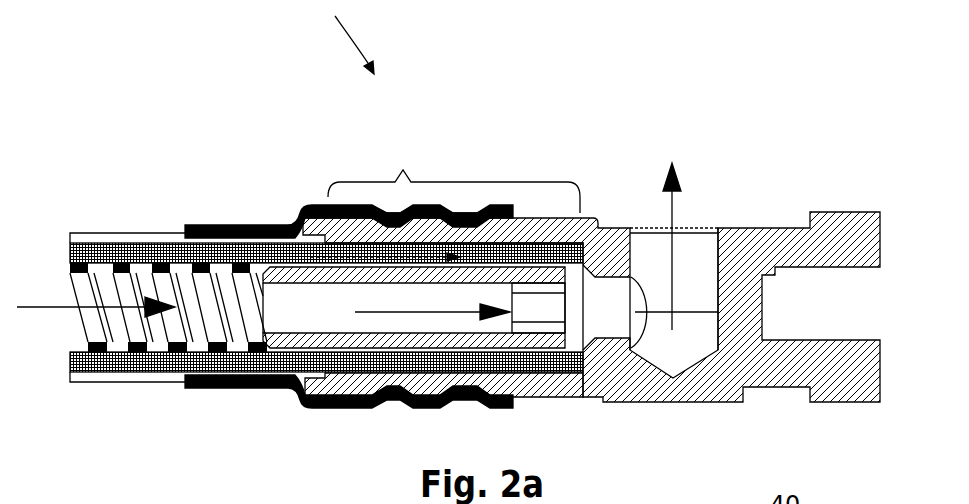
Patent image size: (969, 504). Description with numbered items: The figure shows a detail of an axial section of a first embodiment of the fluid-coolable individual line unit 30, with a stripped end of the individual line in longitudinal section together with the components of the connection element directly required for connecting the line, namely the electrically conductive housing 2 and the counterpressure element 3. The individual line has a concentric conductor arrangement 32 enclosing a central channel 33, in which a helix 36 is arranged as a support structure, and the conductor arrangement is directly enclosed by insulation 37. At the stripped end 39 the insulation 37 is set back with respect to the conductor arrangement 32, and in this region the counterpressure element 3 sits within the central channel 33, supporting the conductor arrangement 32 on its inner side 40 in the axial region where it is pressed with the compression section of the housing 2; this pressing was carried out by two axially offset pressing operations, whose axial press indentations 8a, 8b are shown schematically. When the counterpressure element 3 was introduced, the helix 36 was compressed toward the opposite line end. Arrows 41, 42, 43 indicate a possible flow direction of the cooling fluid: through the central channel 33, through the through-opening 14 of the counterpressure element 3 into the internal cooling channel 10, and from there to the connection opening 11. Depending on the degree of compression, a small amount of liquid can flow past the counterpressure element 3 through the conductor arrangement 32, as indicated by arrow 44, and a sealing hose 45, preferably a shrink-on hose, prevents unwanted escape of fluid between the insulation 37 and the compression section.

The electrically conductive housing 2 is at (680, 402).
The counterpressure element 3 is at (573, 226).
The axial press indentation 8a is at (447, 409).
The axial press indentation 8b is at (383, 407).
The internal cooling channel 10 is at (722, 231).
The connection opening 11 is at (687, 235).
The through-opening 14 is at (278, 292).
The fluid-coolable individual line unit 30 is at (344, 37).
The concentric conductor arrangement 32 is at (123, 363).
The central channel 33 is at (142, 286).
The helix 36 is at (160, 264).
The insulation 37 is at (88, 233).
The stripped end 39 is at (454, 176).
The inner side 40 is at (448, 348).
The arrow 41 is at (65, 310).
The arrow 42 is at (355, 312).
The arrow 43 is at (670, 217).
The arrow 44 is at (383, 257).
The sealing hose 45 is at (245, 389).